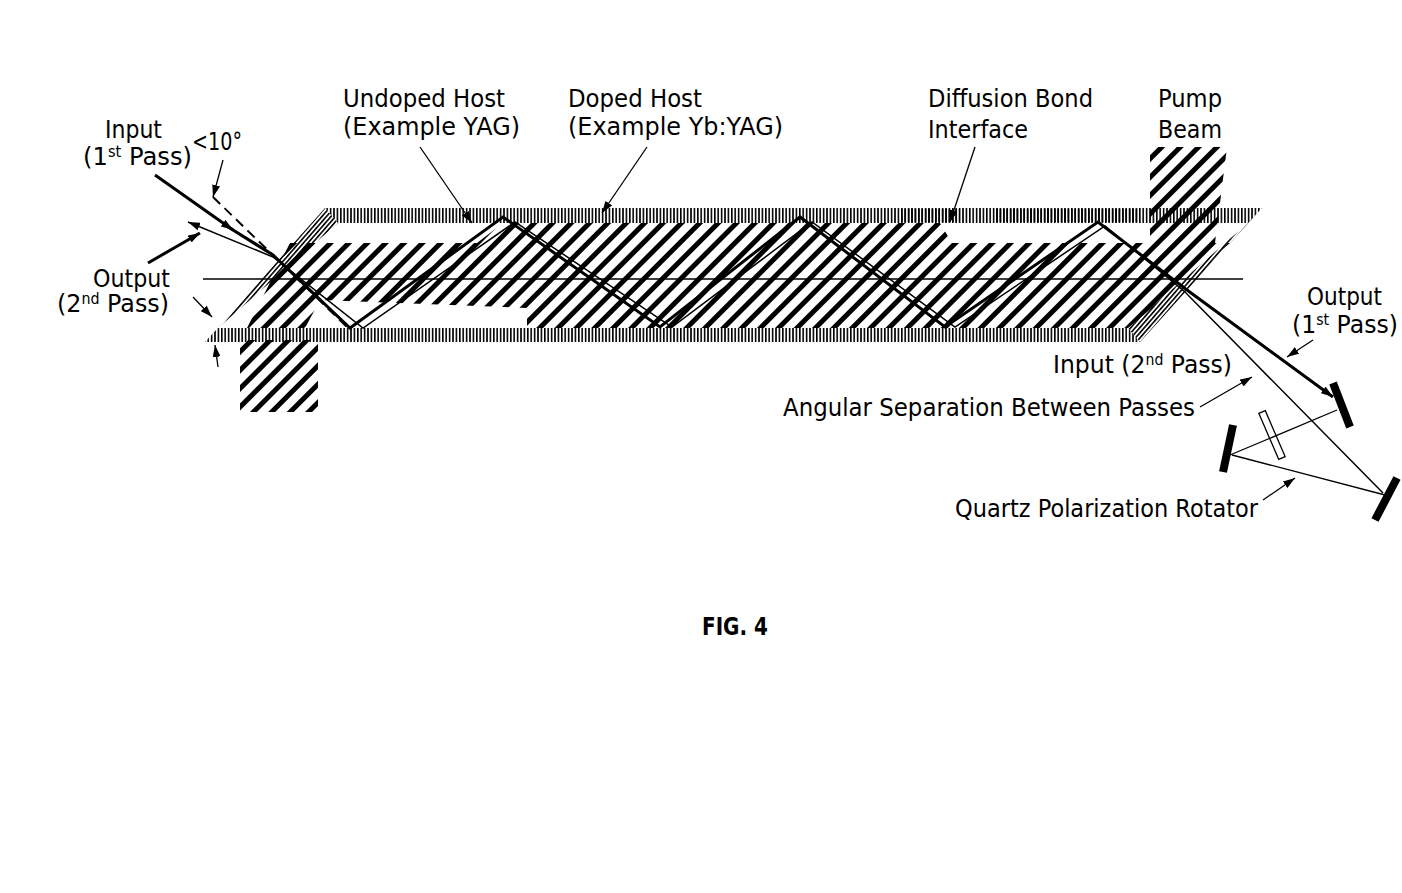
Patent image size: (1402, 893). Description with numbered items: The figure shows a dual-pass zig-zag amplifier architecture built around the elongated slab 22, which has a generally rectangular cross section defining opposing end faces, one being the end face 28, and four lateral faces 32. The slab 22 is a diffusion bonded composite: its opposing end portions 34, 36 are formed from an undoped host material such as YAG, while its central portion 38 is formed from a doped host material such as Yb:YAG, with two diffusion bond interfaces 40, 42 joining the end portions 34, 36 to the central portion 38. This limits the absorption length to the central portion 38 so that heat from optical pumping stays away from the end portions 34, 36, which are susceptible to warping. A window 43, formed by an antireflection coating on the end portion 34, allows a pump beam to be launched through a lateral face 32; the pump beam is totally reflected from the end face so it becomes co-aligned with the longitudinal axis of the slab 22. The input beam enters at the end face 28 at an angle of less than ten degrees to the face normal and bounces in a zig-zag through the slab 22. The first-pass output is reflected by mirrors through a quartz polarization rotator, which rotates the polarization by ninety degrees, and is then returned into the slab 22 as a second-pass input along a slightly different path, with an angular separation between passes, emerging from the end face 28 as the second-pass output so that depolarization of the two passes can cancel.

The elongated slab 22 is at (360, 212).
The end face 28 is at (314, 222).
The lateral face 32 is at (1018, 218).
The end portion 34 is at (1108, 178).
The end portion 36 is at (323, 165).
The central portion 38 is at (817, 150).
The diffusion bond interface 40 is at (918, 218).
The diffusion bond interface 42 is at (545, 212).
The window 43 is at (1073, 218).